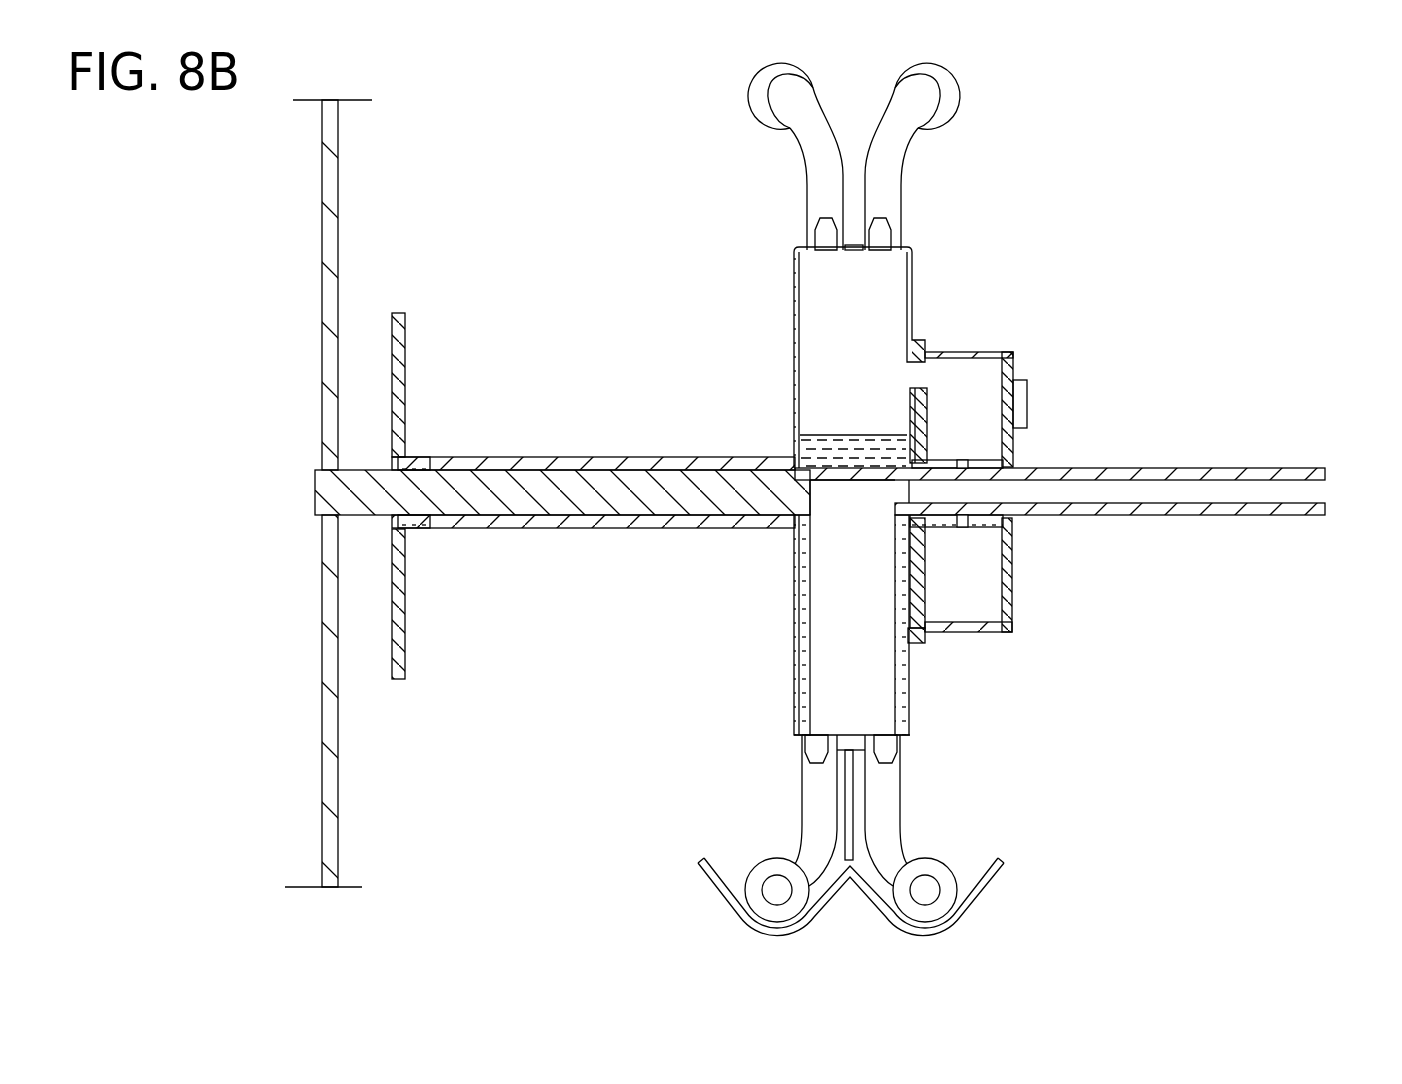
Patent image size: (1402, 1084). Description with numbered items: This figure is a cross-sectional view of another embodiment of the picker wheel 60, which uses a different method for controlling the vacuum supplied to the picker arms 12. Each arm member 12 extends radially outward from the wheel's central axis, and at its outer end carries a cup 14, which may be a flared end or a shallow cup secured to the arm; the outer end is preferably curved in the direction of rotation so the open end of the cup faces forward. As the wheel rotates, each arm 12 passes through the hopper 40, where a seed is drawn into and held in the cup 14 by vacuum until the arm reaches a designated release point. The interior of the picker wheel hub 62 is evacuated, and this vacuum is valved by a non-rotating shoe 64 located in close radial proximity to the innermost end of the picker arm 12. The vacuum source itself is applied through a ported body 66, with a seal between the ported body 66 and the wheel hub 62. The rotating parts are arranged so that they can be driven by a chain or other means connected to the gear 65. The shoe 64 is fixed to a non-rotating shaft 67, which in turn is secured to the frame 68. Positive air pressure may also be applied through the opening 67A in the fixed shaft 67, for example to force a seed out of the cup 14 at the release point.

The arm member 12 is at (912, 176).
The cup 14 is at (958, 97).
The hopper 40 is at (990, 880).
The picker wheel 60 is at (952, 455).
The picker wheel hub 62 is at (913, 300).
The non-rotating shoe 64 is at (793, 722).
The gear 65 is at (406, 375).
The ported body 66 is at (1008, 352).
The non-rotating shaft 67 is at (1254, 515).
The opening 67A is at (1322, 478).
The frame 68 is at (340, 228).